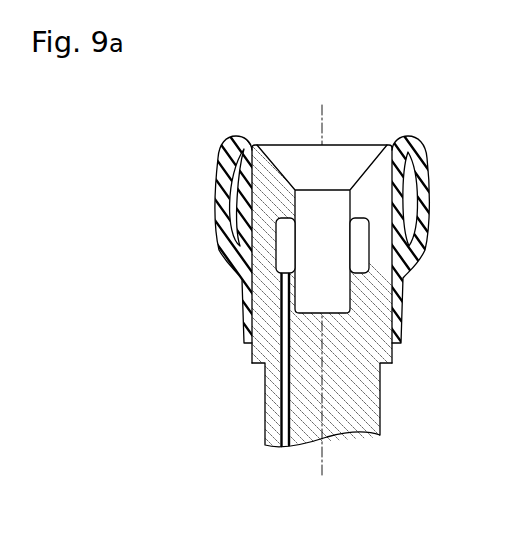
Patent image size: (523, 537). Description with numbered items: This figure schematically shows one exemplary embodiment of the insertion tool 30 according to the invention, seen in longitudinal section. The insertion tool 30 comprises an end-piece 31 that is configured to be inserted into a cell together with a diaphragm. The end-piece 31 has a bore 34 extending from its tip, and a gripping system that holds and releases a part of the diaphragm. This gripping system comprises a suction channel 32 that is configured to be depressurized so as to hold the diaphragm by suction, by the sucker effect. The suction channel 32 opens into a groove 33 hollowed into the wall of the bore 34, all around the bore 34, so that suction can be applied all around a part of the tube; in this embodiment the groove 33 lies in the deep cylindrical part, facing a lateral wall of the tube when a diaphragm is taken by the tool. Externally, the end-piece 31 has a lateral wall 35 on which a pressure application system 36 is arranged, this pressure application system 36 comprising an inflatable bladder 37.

The insertion tool 30 is at (418, 404).
The end-piece 31 is at (395, 185).
The suction channel 32 is at (286, 338).
The groove 33 is at (285, 253).
The bore 34 is at (333, 267).
The lateral wall 35 is at (409, 284).
The pressure application system 36 is at (453, 252).
The inflatable bladder 37 is at (430, 207).